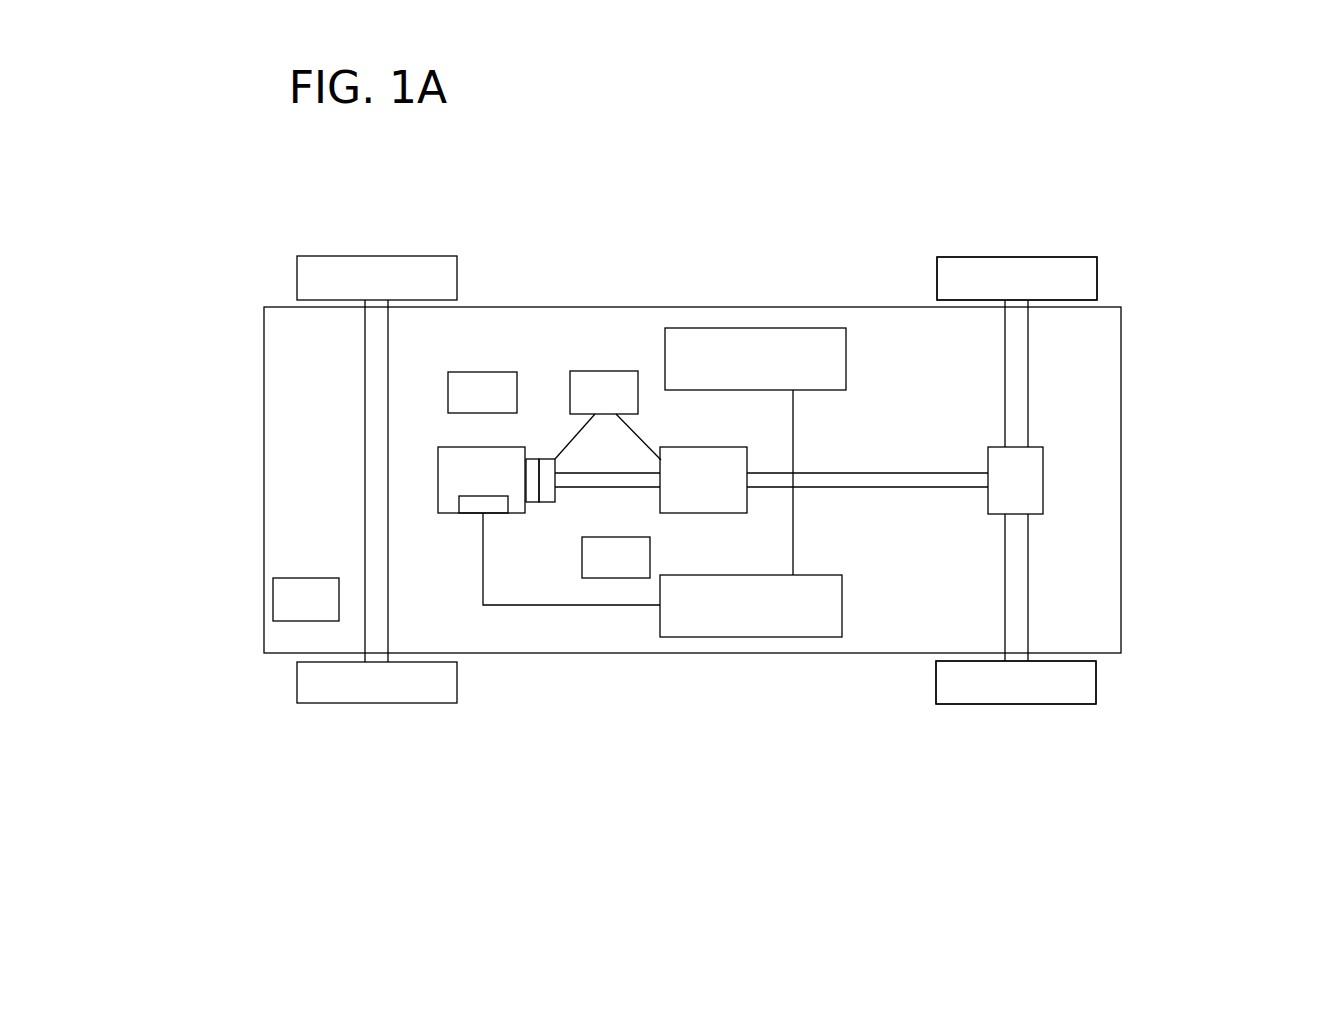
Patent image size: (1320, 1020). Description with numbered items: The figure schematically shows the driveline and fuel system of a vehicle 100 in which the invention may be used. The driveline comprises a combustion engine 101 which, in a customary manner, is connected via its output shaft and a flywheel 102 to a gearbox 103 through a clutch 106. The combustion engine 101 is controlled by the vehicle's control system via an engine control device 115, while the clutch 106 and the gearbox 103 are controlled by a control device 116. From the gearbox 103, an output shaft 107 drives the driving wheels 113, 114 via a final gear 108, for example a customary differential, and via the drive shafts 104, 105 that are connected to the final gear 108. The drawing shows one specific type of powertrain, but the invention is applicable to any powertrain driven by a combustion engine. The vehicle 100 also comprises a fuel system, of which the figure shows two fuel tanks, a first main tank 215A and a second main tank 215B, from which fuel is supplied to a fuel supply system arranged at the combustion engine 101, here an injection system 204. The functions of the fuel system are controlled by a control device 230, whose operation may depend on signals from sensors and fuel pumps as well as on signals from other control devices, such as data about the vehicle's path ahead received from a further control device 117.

The vehicle 100 is at (687, 102).
The combustion engine 101 is at (457, 458).
The flywheel 102 is at (530, 490).
The gearbox 103 is at (747, 505).
The drive shaft 104 is at (1017, 382).
The drive shaft 105 is at (1022, 570).
The clutch 106 is at (547, 502).
The output shaft 107 is at (850, 472).
The final gear 108 is at (1022, 493).
The driving wheel 113 is at (1072, 275).
The driving wheel 114 is at (1054, 678).
The engine control device 115 is at (503, 388).
The control device 116 is at (617, 395).
The control device 117 is at (295, 605).
The injection system 204 is at (467, 513).
The first main tank 215A is at (726, 612).
The second main tank 215B is at (740, 343).
The control device 230 is at (615, 578).